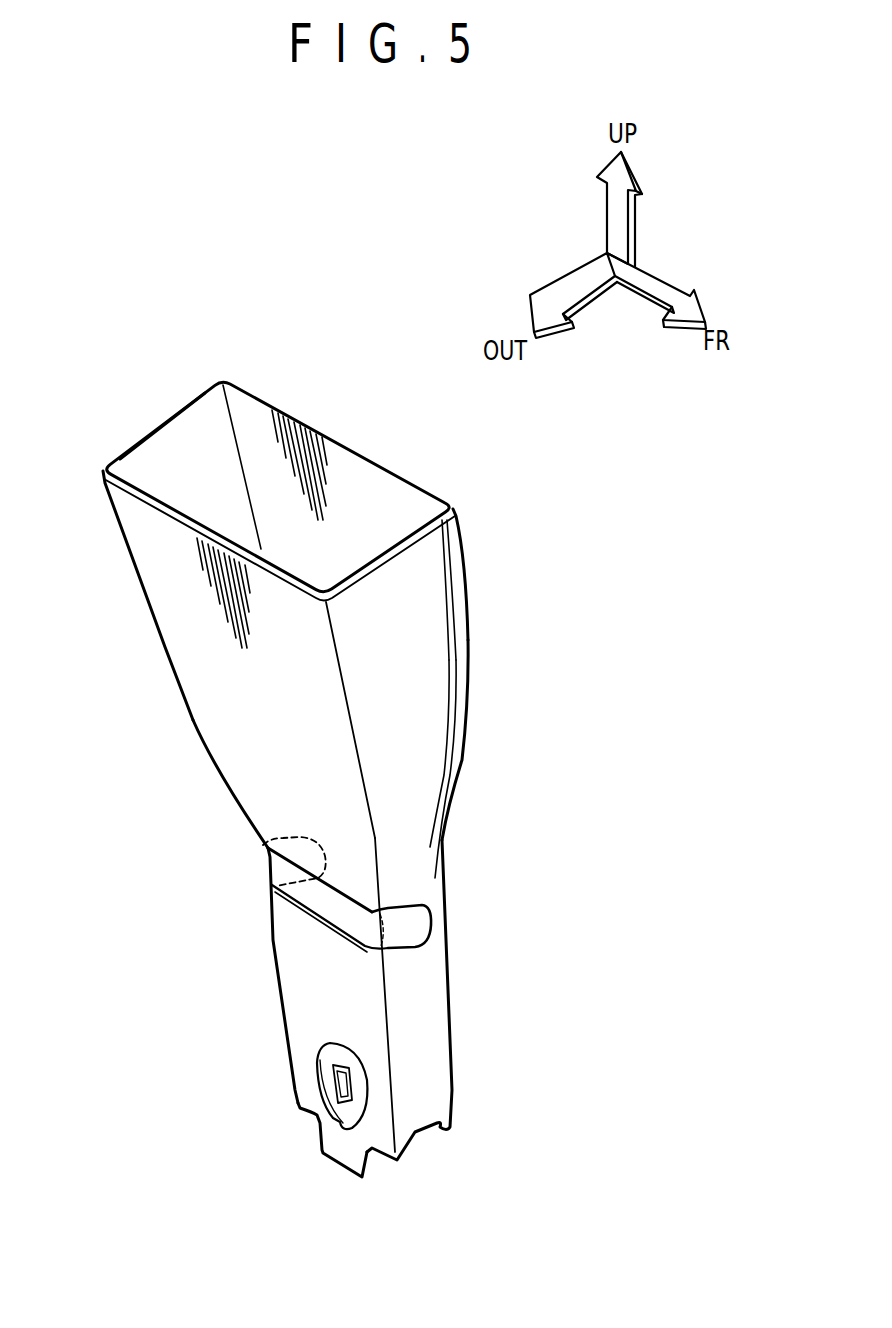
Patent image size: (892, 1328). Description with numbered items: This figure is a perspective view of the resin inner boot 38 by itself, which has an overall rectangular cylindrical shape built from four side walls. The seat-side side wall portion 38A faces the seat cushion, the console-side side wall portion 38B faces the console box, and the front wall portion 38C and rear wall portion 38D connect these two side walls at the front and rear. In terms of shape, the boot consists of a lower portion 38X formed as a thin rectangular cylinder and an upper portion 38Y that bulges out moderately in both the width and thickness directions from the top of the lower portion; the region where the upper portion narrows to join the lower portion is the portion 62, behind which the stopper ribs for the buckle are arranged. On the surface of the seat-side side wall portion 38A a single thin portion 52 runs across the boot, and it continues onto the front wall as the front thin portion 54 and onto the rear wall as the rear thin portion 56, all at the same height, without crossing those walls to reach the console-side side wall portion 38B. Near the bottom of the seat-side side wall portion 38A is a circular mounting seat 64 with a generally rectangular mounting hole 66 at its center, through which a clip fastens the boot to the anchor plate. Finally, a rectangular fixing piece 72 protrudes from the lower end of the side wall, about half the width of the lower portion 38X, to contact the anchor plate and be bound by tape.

The inner boot 38 is at (492, 507).
The seat-side side wall portion 38A is at (193, 632).
The console-side side wall portion 38B is at (334, 430).
The front wall portion 38C is at (438, 663).
The rear wall portion 38D is at (160, 426).
The lower portion 38X is at (430, 1063).
The upper portion 38Y is at (433, 764).
The thin portion 52 is at (318, 902).
The front thin portion 54 is at (418, 928).
The rear thin portion 56 is at (262, 848).
The portion that starts to become narrow 62 is at (214, 762).
The mounting seat 64 is at (330, 1053).
The mounting hole 66 is at (337, 1073).
The fixing piece 72 is at (343, 1152).